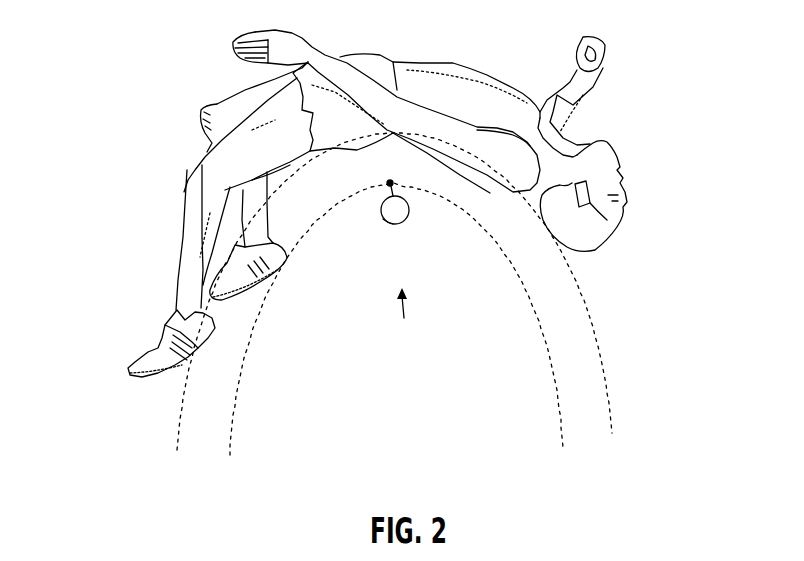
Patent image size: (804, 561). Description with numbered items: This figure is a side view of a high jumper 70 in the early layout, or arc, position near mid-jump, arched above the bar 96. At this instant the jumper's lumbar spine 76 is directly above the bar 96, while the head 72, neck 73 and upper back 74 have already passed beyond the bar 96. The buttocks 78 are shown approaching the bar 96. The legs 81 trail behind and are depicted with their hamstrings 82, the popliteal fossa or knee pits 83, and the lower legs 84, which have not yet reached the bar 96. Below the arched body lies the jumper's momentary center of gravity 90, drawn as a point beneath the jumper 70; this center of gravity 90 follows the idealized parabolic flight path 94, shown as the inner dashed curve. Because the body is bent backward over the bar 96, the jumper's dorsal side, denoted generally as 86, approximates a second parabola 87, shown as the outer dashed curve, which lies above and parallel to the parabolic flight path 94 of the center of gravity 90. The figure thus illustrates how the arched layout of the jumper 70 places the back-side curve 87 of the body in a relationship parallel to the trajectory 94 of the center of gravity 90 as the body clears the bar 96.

The jumper 70 is at (367, 198).
The head 72 is at (595, 251).
The neck 73 is at (540, 190).
The upper back 74 is at (457, 199).
The lumbar spine 76 is at (393, 133).
The buttocks 78 is at (330, 150).
The legs 81 is at (178, 149).
The hamstrings 82 is at (291, 172).
The popliteal fossa or knee pits 83 is at (232, 189).
The lower legs 84 is at (172, 231).
The dorsal side 86 is at (407, 320).
The parabola 87 is at (605, 372).
The center of gravity 90 is at (405, 220).
The parabolic flight path 94 is at (551, 368).
The bar 96 is at (382, 218).